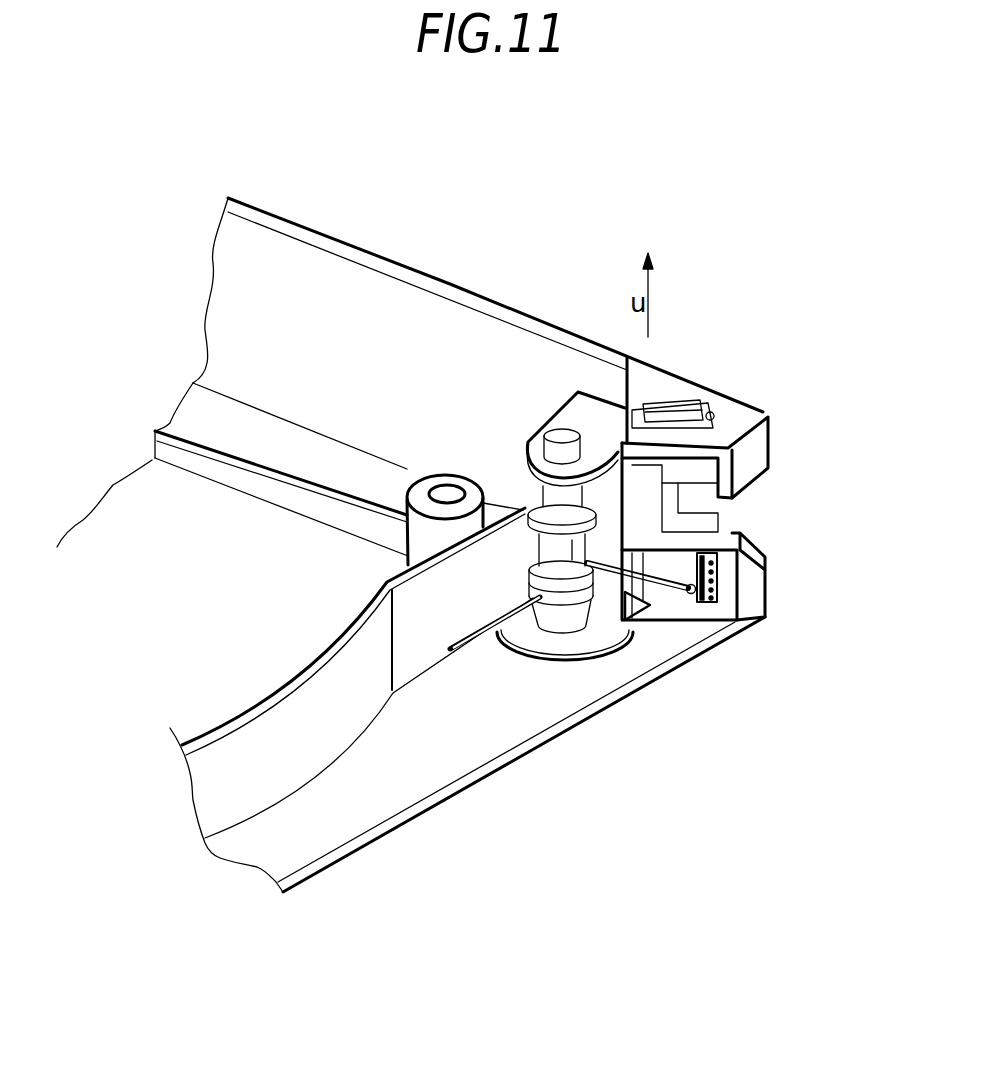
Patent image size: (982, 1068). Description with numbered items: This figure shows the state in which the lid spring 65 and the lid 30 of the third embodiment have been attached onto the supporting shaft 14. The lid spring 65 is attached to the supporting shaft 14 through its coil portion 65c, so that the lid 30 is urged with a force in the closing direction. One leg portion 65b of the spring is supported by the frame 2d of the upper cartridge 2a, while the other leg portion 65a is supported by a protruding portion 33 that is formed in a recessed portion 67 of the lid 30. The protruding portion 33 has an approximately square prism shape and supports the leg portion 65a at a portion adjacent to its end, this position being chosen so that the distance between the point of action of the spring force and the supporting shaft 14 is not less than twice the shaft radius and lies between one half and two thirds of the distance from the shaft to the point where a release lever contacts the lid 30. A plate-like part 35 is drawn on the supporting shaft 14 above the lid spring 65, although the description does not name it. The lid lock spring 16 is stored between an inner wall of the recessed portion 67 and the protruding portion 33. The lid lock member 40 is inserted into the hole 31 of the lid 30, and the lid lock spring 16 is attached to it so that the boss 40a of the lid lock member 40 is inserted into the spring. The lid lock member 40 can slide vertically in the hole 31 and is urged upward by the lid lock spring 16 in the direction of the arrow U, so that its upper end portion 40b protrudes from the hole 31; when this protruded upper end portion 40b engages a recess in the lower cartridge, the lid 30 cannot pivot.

The lid 30 is at (332, 280).
The hole 31 is at (713, 413).
The supporting shaft 14 is at (547, 497).
The lever 35 is at (575, 413).
The lid lock member 40 is at (705, 474).
The boss 40a is at (712, 573).
The upper end portion 40b is at (677, 410).
The recessed portion 67 is at (677, 558).
The lid lock spring 16 is at (712, 598).
The protruding portion 33 is at (660, 596).
The lid spring 65 is at (560, 600).
The leg portion 65a is at (663, 585).
The leg portion 65b is at (492, 628).
The coil portion 65c is at (568, 610).
The upper cartridge 2a is at (463, 748).
The frame 2d is at (320, 747).